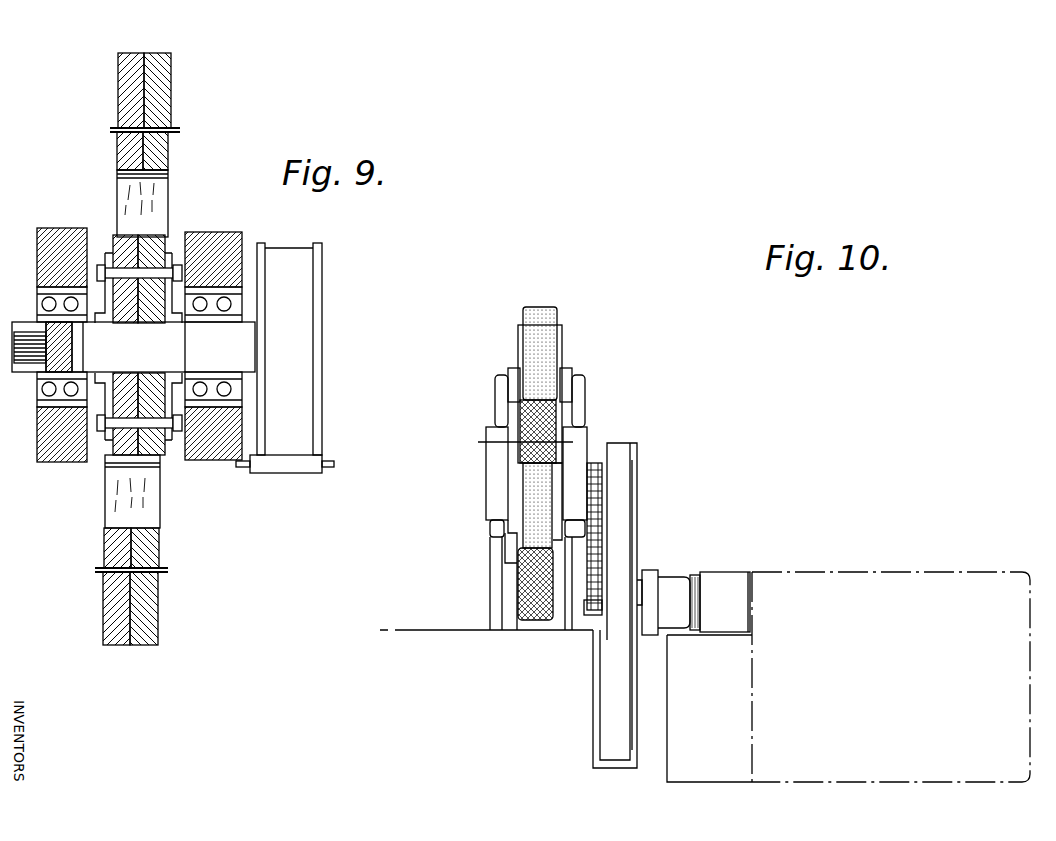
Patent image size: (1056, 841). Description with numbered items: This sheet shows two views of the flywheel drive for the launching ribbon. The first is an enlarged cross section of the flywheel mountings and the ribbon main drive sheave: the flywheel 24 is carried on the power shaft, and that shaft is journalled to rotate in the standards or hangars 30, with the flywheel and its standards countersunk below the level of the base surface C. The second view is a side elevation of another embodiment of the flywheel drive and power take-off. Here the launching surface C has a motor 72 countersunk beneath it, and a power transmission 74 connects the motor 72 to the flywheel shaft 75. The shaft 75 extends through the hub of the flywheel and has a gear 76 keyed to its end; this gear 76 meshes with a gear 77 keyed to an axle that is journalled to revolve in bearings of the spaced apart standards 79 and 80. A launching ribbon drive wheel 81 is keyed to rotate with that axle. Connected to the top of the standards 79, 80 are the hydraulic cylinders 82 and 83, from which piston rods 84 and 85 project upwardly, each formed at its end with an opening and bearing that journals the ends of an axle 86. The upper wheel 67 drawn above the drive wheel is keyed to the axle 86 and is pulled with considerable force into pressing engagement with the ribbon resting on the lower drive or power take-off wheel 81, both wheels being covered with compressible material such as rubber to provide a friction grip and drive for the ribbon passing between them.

In FIG. 9, the flywheel 24 is at (163, 150).
In FIG. 9, the standards 30 is at (46, 235).
In FIG. 10, the roller 67 is at (553, 320).
In FIG. 10, the motor 72 is at (922, 592).
In FIG. 10, the power transmission 74 is at (728, 575).
In FIG. 10, the flywheel shaft 75 is at (642, 592).
In FIG. 10, the gear 76 is at (591, 618).
In FIG. 10, the gear 77 is at (607, 535).
In FIG. 10, the standard 79 is at (493, 622).
In FIG. 10, the standard 80 is at (570, 617).
In FIG. 10, the launching ribbon drive wheel 81 is at (525, 542).
In FIG. 10, the hydraulic cylinder 82 is at (490, 478).
In FIG. 10, the hydraulic cylinder 83 is at (578, 455).
In FIG. 10, the piston rod 84 is at (497, 410).
In FIG. 10, the piston rod 85 is at (578, 407).
In FIG. 10, the axle 86 is at (580, 388).
In FIG. 10, the base surface C is at (432, 622).